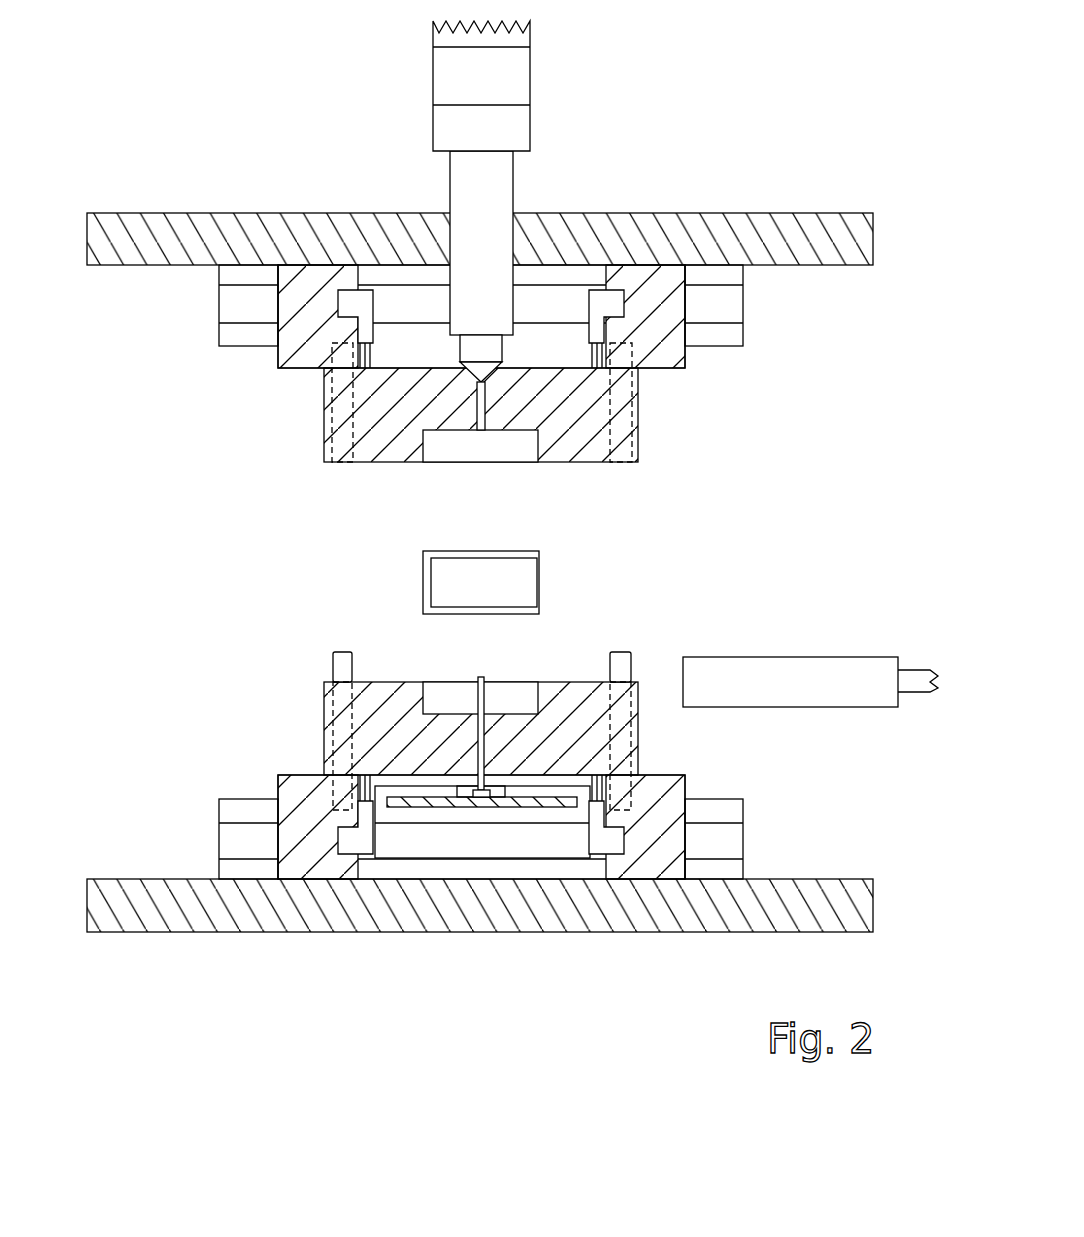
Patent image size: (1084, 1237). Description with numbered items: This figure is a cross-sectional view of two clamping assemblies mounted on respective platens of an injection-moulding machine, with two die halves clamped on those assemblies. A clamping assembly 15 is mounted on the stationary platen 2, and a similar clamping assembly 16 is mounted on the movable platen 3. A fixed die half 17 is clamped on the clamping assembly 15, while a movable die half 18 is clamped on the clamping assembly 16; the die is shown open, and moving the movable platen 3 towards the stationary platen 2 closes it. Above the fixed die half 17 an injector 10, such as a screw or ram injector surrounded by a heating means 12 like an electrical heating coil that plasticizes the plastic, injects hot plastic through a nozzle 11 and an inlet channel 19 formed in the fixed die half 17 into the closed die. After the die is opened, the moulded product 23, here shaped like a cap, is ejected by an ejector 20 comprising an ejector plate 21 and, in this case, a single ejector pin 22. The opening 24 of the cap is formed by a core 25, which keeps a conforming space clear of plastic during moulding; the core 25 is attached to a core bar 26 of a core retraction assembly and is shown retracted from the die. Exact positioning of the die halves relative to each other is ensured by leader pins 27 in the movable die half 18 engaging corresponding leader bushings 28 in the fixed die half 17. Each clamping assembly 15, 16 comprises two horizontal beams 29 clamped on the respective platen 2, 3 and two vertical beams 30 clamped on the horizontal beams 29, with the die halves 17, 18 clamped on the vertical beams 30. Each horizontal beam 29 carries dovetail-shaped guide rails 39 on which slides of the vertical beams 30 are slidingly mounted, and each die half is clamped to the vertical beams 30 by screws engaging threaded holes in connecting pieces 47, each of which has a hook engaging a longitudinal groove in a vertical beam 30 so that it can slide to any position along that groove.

The stationary platen 2 is at (130, 264).
The movable platen 3 is at (848, 878).
The injector 10 is at (515, 192).
The nozzle 11 is at (487, 375).
The heating means 12 is at (517, 80).
The clamping assembly 15 is at (259, 384).
The clamping assembly 16 is at (221, 736).
The fixed die half 17 is at (405, 455).
The movable die half 18 is at (388, 695).
The inlet channel 19 is at (480, 405).
The ejector 20 is at (465, 811).
The ejector plate 21 is at (507, 802).
The ejector pin 22 is at (482, 702).
The moulded product 23 is at (464, 551).
The opening 24 is at (459, 594).
The core 25 is at (713, 668).
The core bar 26 is at (917, 677).
The leader pins 27 is at (340, 665).
The leader bushings 28 is at (342, 445).
The horizontal beams 29 is at (735, 338).
The vertical beams 30 is at (683, 363).
The guide rails 39 is at (738, 305).
The connecting pieces 47 is at (618, 298).